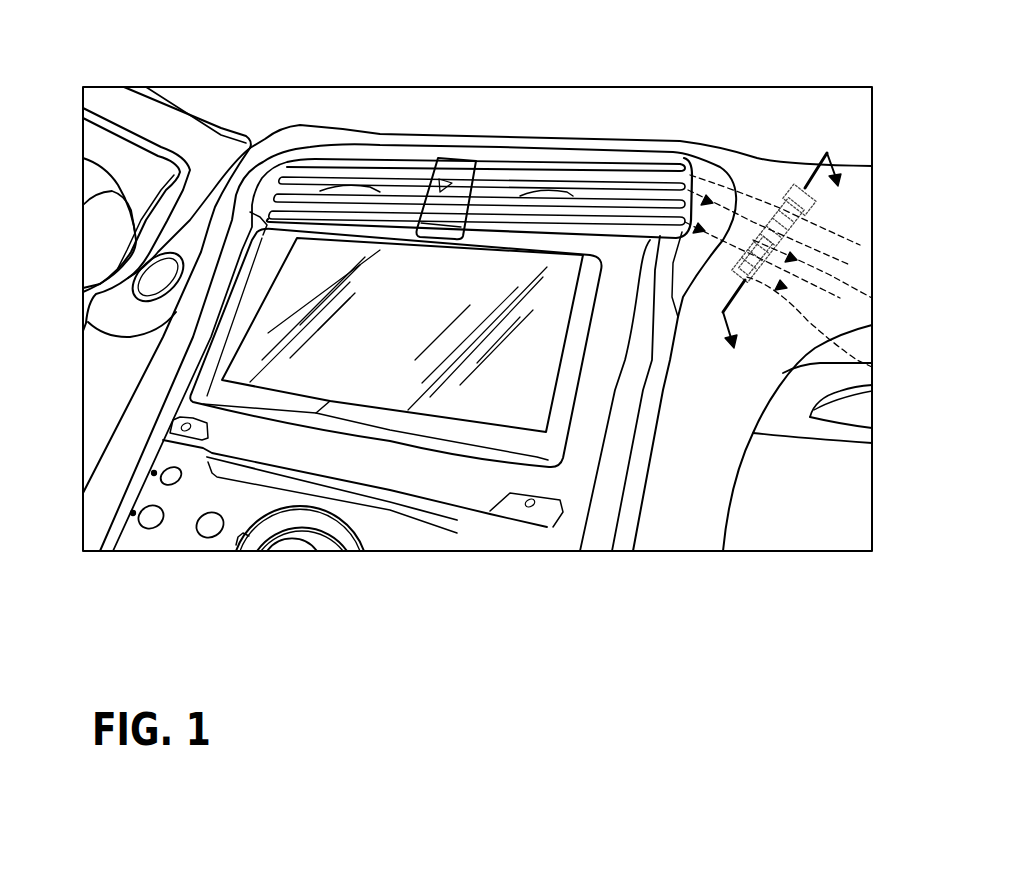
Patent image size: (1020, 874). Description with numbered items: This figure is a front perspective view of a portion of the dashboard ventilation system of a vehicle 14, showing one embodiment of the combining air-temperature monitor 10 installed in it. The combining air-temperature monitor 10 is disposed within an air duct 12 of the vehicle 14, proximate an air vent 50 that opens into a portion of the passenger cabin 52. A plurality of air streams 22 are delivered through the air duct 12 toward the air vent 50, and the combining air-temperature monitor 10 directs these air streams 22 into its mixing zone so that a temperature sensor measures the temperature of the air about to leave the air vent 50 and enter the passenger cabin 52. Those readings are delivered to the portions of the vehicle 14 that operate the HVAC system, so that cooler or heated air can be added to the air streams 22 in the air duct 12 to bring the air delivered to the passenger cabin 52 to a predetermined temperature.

The vehicle 14 is at (357, 79).
The air vent 50 is at (536, 178).
The combining air-temperature monitor 10 is at (796, 196).
The air duct 12 is at (805, 253).
The air streams 22 is at (808, 280).
The passenger cabin 52 is at (119, 361).